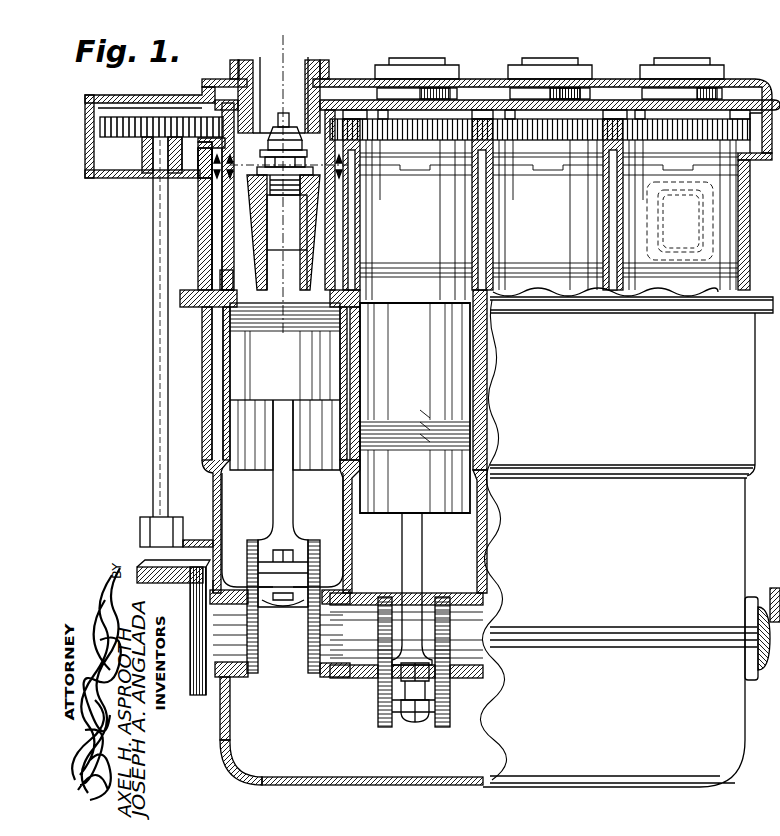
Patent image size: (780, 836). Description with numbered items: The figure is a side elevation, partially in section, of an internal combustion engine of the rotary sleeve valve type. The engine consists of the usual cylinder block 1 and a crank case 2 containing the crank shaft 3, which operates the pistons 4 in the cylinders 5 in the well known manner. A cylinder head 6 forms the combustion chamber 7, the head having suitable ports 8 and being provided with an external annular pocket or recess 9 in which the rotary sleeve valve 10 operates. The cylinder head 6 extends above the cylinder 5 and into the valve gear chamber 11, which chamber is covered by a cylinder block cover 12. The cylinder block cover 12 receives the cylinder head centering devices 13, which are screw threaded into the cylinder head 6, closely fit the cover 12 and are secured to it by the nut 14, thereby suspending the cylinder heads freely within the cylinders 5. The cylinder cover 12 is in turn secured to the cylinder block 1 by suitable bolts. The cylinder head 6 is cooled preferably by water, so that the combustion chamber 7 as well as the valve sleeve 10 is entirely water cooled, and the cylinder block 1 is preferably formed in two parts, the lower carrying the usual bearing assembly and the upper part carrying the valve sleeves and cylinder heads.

The cylinder block 1 is at (631, 387).
The crank case 2 is at (414, 380).
The crank shaft 3 is at (318, 628).
The pistons 4 is at (395, 507).
The cylinders 5 is at (362, 368).
The cylinder head 6 is at (257, 247).
The combustion chamber 7 is at (263, 287).
The ports 8 is at (277, 217).
The external annular pocket or recess 9 is at (260, 278).
The rotary sleeve valve 10 is at (220, 197).
The valve gear chamber 11 is at (355, 100).
The cylinder block cover 12 is at (470, 80).
The cylinder head centering devices 13 is at (312, 98).
The nut 14 is at (350, 108).